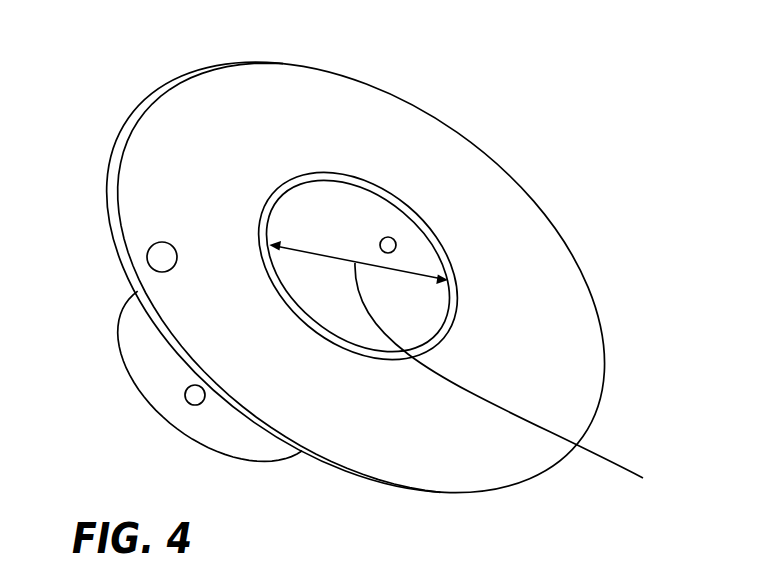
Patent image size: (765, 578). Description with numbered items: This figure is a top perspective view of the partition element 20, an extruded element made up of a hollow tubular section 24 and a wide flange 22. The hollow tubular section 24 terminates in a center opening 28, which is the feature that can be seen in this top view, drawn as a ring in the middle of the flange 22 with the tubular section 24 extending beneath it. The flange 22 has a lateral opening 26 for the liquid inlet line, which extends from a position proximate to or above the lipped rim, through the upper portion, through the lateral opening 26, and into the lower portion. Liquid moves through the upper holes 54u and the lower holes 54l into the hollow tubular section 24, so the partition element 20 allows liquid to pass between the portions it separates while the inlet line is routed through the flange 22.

The partition element 20 is at (606, 148).
The wide flange 22 is at (234, 328).
The hollow tubular section 24 is at (162, 366).
The lateral opening 26 is at (163, 256).
The center opening 28 is at (455, 320).
The upper holes 54u is at (390, 237).
The lower holes 54l is at (187, 400).